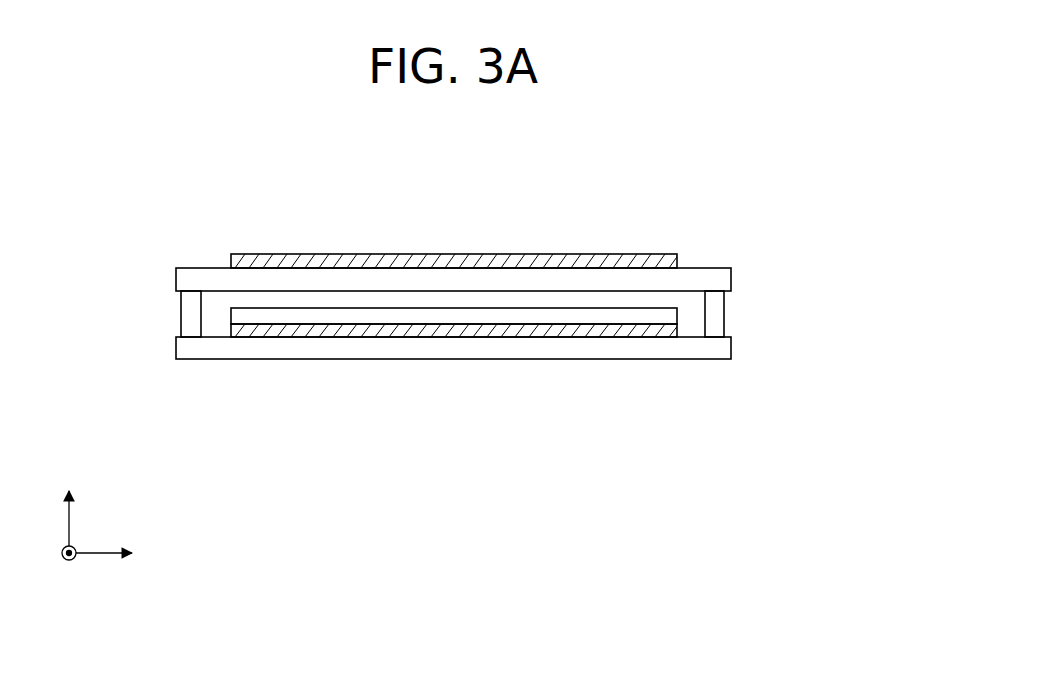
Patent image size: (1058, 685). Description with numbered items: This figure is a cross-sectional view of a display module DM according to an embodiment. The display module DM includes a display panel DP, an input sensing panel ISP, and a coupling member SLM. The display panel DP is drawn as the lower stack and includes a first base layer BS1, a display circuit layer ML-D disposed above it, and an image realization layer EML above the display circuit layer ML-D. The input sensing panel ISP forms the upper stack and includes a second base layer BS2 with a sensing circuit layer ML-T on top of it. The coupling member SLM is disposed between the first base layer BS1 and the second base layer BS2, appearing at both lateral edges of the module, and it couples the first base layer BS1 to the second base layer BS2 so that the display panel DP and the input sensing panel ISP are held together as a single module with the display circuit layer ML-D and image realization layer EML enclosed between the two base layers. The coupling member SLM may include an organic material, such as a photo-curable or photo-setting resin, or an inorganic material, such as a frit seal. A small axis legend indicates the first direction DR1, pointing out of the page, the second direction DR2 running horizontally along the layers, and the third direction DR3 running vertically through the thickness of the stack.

The display module DM is at (712, 181).
The input sensing panel ISP is at (539, 259).
The sensing circuit layer ML-T is at (657, 263).
The second base layer BS2 is at (722, 280).
The coupling member SLM is at (190, 315).
The display panel DP is at (537, 339).
The image realization layer EML is at (667, 315).
The display circuit layer ML-D is at (657, 330).
The first base layer BS1 is at (722, 348).
The first direction DR1 is at (73, 569).
The second direction DR2 is at (132, 554).
The third direction DR3 is at (73, 501).